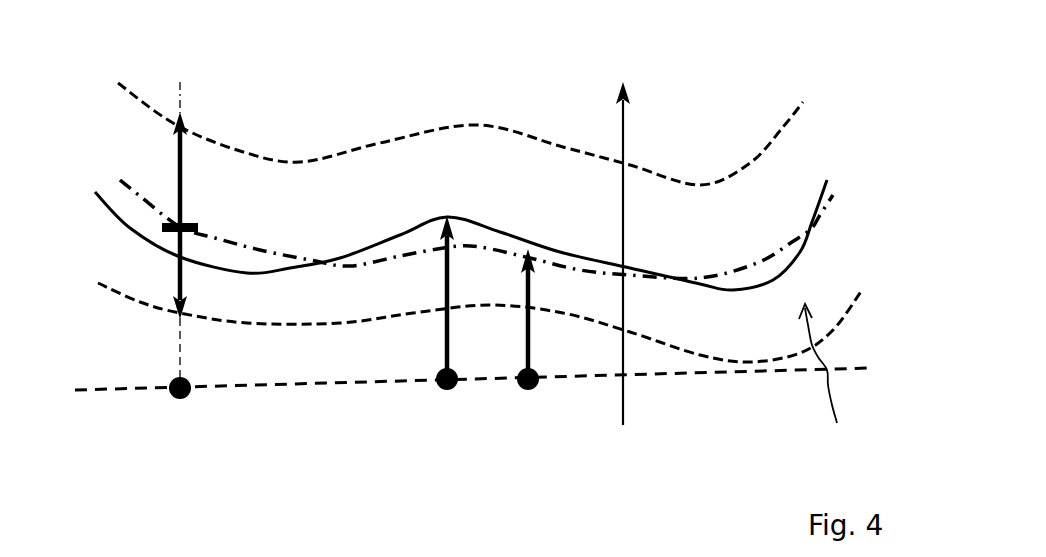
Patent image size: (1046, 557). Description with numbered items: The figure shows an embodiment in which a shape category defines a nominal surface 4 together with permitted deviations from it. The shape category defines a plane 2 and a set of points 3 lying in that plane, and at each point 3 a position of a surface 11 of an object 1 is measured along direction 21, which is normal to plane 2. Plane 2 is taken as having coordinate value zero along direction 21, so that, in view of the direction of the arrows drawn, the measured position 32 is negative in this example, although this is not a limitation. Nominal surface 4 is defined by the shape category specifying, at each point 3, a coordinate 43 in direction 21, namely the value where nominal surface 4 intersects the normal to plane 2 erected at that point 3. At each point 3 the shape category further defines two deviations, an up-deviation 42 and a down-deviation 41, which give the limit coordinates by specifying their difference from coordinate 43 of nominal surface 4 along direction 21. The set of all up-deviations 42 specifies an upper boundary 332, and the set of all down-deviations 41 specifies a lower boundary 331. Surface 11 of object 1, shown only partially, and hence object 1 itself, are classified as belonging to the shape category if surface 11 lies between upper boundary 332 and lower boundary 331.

The object 1 is at (822, 374).
The plane 2 is at (708, 375).
The direction normal to plane 21 is at (623, 407).
The point 3 is at (180, 400).
The measured position 32 is at (443, 340).
The coordinate of nominal surface 43 is at (560, 330).
The surface 11 is at (113, 215).
The lower boundary 331 is at (140, 303).
The upper boundary 332 is at (420, 128).
The nominal surface 4 is at (130, 182).
The down-deviation 41 is at (183, 277).
The up-deviation 42 is at (182, 163).